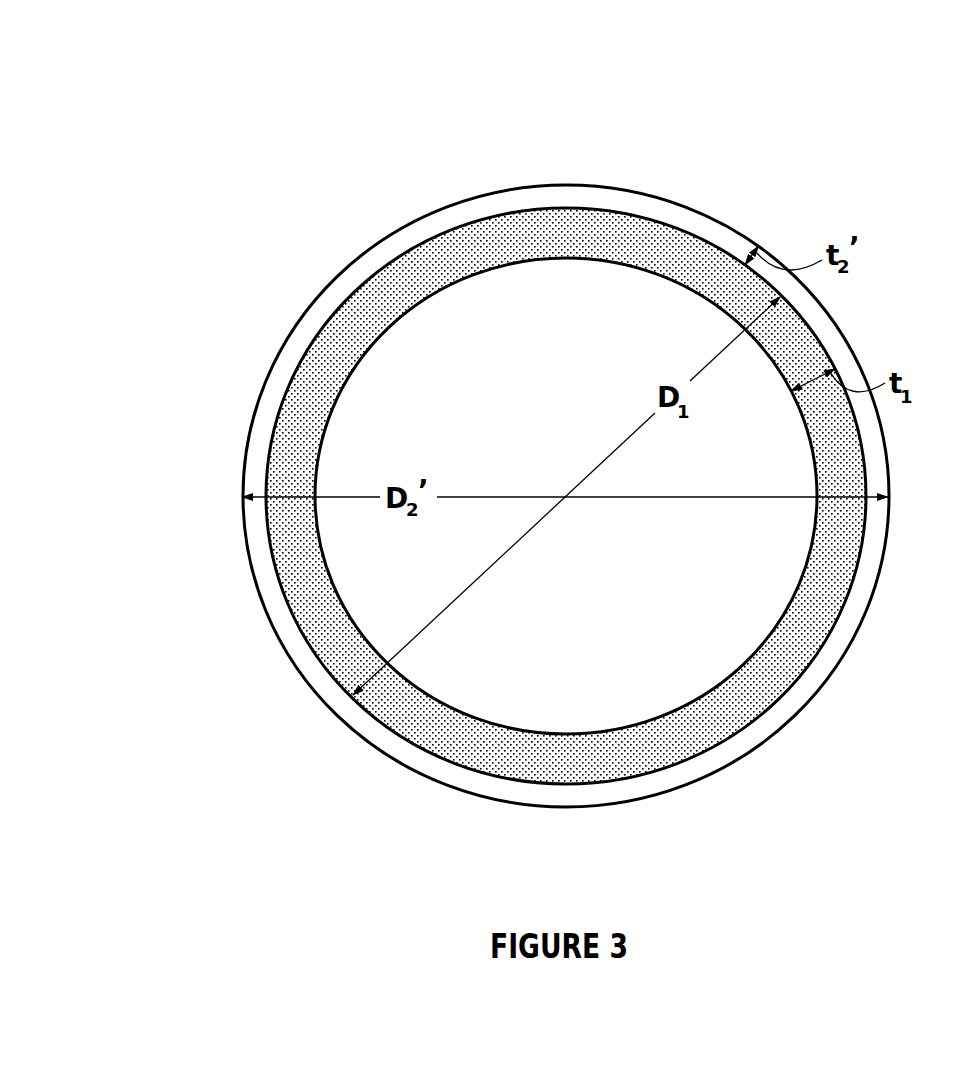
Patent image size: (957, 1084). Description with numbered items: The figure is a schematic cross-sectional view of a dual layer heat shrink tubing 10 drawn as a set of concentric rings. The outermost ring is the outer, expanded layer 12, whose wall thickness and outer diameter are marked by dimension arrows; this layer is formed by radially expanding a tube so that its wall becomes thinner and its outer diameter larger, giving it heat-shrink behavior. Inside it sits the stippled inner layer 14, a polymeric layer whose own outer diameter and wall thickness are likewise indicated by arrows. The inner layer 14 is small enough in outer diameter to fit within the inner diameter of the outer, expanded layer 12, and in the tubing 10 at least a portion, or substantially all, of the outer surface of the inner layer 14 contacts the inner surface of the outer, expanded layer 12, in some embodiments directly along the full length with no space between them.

The dual layer heat shrink tubing 10 is at (489, 447).
The outer, expanded layer 12 is at (632, 87).
The inner layer 14 is at (802, 678).